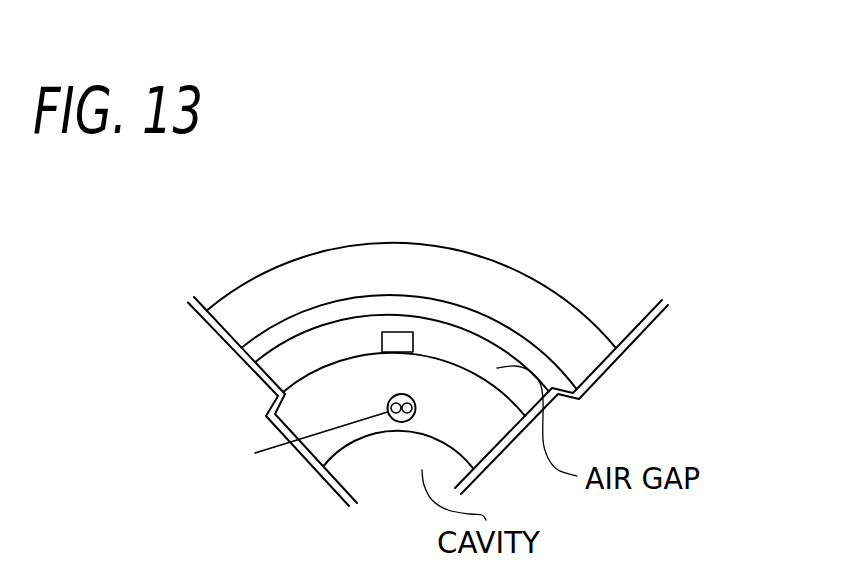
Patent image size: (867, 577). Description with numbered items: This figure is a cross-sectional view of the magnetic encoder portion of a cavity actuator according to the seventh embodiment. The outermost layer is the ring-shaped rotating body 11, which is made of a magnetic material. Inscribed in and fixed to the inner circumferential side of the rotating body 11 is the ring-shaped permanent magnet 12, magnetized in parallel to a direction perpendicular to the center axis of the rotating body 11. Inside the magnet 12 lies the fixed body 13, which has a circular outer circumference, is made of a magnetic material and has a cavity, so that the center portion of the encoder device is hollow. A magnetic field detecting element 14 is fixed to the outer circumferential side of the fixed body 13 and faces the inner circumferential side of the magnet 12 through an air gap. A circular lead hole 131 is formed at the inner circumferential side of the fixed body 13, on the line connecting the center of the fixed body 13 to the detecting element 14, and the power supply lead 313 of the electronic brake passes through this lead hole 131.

The rotating body 11 is at (430, 277).
The permanent magnet 12 is at (463, 317).
The fixed body 13 is at (448, 381).
The magnetic field detecting element 14 is at (397, 343).
The lead hole 131 is at (388, 404).
The power supply lead 313 is at (255, 453).